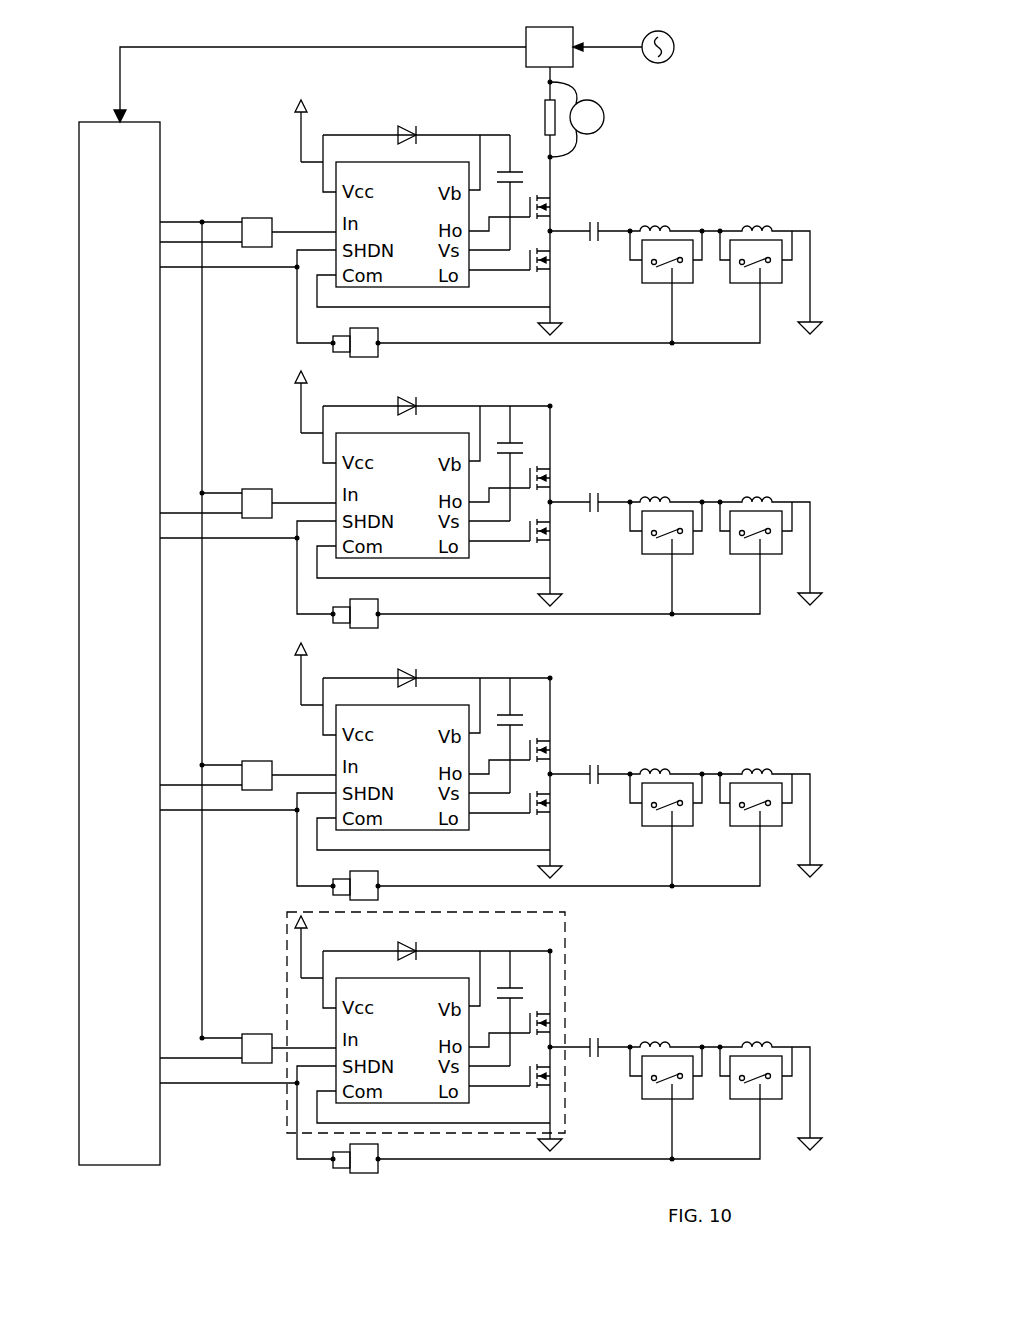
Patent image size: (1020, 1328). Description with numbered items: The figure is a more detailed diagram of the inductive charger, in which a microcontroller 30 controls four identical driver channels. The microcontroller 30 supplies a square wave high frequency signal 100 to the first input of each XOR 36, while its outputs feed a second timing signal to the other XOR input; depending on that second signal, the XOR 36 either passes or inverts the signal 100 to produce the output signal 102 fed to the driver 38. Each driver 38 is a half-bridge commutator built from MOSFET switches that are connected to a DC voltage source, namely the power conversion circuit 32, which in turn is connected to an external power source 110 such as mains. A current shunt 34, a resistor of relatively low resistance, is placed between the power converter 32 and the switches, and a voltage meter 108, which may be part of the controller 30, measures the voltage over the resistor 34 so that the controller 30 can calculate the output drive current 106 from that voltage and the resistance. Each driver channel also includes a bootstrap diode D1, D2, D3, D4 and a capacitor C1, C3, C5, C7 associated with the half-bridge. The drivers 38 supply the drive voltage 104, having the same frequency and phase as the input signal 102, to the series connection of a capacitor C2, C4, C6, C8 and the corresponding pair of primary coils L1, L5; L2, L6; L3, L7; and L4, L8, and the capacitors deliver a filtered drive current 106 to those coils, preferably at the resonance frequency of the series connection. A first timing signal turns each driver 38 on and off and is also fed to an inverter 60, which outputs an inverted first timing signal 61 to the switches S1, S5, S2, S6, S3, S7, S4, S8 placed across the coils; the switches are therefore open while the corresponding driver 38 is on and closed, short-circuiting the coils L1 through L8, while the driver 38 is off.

The microcontroller 30 is at (125, 631).
The power conversion circuit 32 is at (559, 57).
The current shunt 34 is at (544, 110).
The logical exclusive disjunction (XOR) 36 is at (258, 218).
The driver 38 is at (287, 1132).
The inverter 60 is at (382, 332).
The inverted first timing signal 61 is at (598, 346).
The signal 100 is at (203, 218).
The output signal 102 is at (288, 230).
The drive voltage 104 is at (553, 230).
The filtered drive current 106 is at (631, 228).
The voltage meter 108 is at (605, 117).
The external power source 110 is at (676, 47).
The diode D1 is at (410, 122).
The diode D2 is at (410, 393).
The diode D3 is at (410, 665).
The diode D4 is at (410, 938).
The capacitor C1 is at (518, 192).
The capacitor C2 is at (606, 245).
The capacitor C3 is at (518, 463).
The capacitor C4 is at (606, 490).
The capacitor C5 is at (518, 735).
The capacitor C6 is at (606, 762).
The capacitor C7 is at (518, 1008).
The capacitor C8 is at (606, 1061).
The primary coil L1 is at (676, 219).
The primary coil L2 is at (676, 490).
The primary coil L3 is at (676, 762).
The primary coil L4 is at (676, 1035).
The primary coil L5 is at (771, 268).
The primary coil L6 is at (771, 539).
The primary coil L7 is at (771, 811).
The primary coil L8 is at (771, 1084).
The switch S1 is at (641, 284).
The switch S2 is at (641, 555).
The switch S3 is at (641, 827).
The switch S4 is at (641, 1100).
The switch S5 is at (731, 284).
The switch S6 is at (731, 555).
The switch S7 is at (731, 827).
The switch S8 is at (731, 1100).